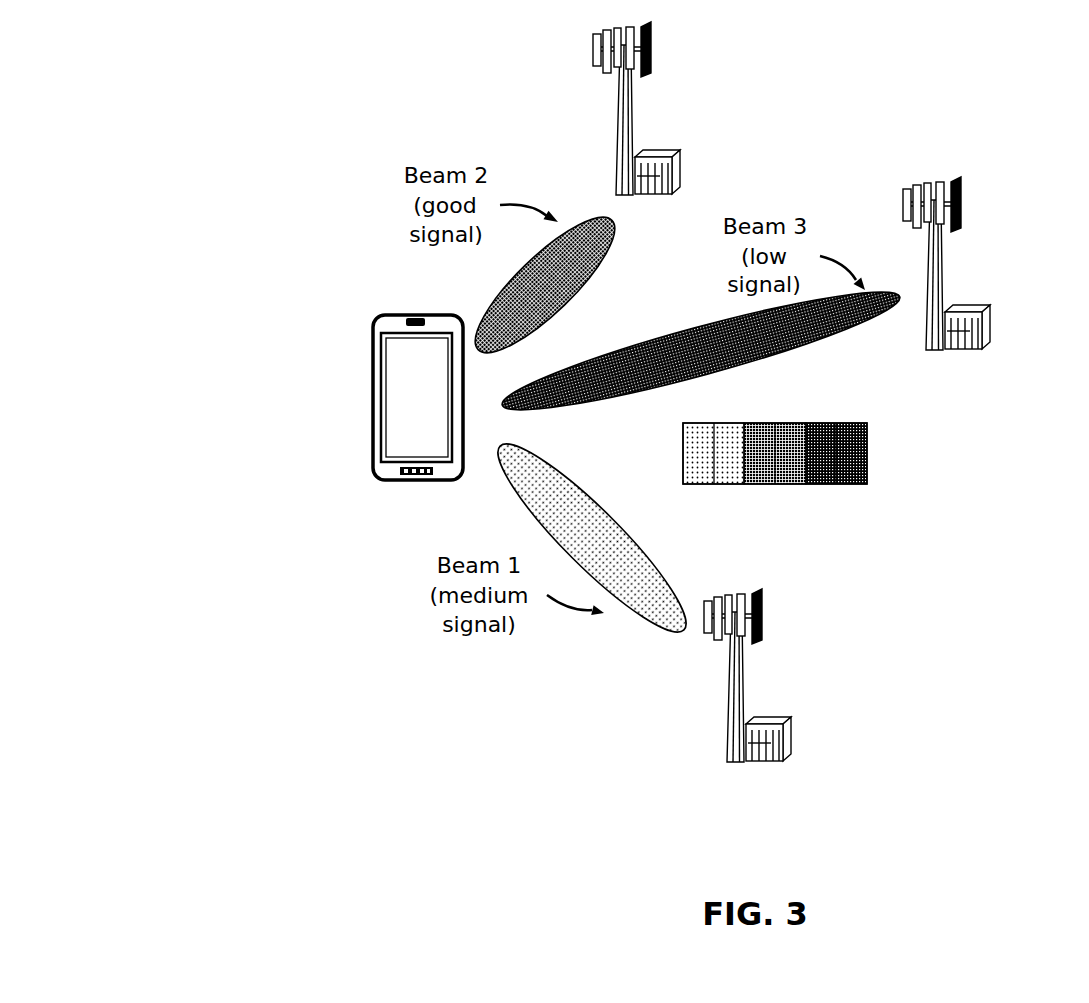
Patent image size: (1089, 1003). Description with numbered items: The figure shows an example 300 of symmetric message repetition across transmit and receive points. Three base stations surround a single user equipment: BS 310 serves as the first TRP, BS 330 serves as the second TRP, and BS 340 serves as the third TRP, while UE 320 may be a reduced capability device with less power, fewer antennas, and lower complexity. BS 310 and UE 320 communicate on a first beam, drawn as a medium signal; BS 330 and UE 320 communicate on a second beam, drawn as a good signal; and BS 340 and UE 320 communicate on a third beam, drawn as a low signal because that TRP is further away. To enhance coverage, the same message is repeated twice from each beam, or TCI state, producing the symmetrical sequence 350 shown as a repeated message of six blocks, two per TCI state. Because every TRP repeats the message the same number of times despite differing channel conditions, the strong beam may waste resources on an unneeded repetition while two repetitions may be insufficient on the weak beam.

The example 300 is at (148, 29).
The BS 310 is at (790, 710).
The UE 320 is at (418, 418).
The BS 330 is at (661, 142).
The BS 340 is at (982, 299).
The symmetrical sequence 350 is at (775, 476).